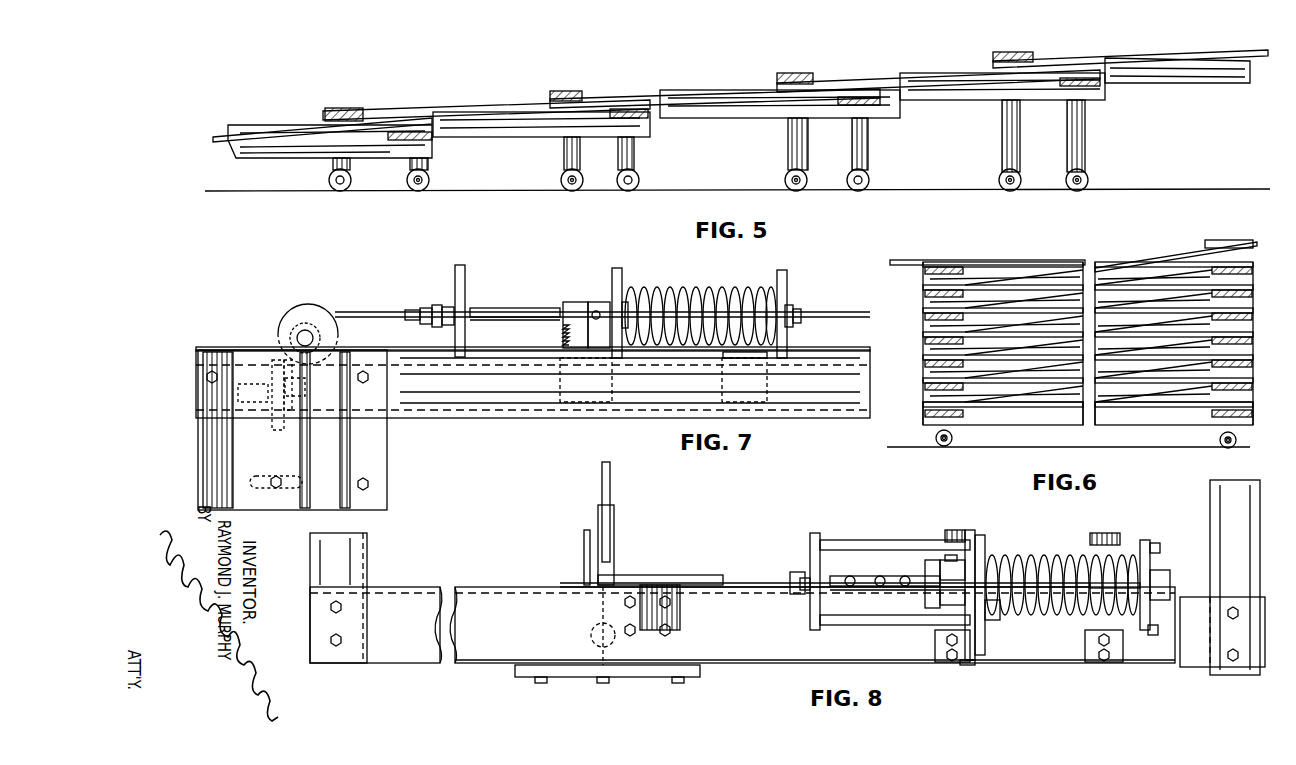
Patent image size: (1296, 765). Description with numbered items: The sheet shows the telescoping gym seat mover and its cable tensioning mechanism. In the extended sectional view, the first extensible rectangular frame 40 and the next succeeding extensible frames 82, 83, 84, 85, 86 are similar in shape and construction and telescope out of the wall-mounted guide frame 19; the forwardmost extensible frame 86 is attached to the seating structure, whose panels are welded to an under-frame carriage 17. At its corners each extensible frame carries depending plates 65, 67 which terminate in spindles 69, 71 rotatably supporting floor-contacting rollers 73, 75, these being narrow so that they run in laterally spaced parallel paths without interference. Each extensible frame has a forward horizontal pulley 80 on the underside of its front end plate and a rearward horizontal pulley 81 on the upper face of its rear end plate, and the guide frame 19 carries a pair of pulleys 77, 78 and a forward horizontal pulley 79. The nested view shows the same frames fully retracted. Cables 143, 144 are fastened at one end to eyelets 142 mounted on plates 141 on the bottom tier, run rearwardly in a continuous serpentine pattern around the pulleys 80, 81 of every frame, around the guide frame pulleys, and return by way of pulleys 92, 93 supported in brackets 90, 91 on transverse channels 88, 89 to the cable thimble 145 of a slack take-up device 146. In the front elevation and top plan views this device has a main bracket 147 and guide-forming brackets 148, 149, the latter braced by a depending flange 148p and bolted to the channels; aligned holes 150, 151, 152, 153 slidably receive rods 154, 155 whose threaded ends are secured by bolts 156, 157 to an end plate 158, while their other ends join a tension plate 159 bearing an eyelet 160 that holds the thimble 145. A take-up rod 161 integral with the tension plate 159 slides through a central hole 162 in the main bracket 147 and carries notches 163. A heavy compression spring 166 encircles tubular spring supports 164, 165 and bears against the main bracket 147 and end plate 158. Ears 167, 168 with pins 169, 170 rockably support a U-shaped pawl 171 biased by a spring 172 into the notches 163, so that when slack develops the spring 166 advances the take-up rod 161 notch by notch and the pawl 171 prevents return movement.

In FIG. 8, the under-frame carriage 17 is at (367, 560).
In FIG. 6, the guide frame 19 is at (1246, 285).
In FIG. 5, the first extensible rectangular frame 40 is at (1178, 84).
In FIG. 6, the first extensible rectangular frame 40 is at (1246, 308).
In FIG. 5, the depending plate 65 is at (428, 165).
In FIG. 5, the depending plate 67 is at (350, 168).
In FIG. 5, the spindle 69 is at (418, 182).
In FIG. 6, the spindle 69 is at (1235, 447).
In FIG. 5, the spindle 71 is at (561, 180).
In FIG. 6, the spindle 71 is at (950, 445).
In FIG. 5, the floor-contacting roller 73 is at (430, 180).
In FIG. 6, the floor-contacting roller 73 is at (1237, 441).
In FIG. 5, the floor-contacting roller 75 is at (329, 180).
In FIG. 6, the floor-contacting roller 75 is at (936, 438).
In FIG. 6, the pulley 77 is at (1255, 240).
In FIG. 6, the pulley 78 is at (1246, 263).
In FIG. 6, the forward horizontal pulley 79 is at (923, 287).
In FIG. 5, the forward horizontal pulley 80 is at (330, 114).
In FIG. 6, the forward horizontal pulley 80 is at (923, 311).
In FIG. 5, the rearward horizontal pulley 81 is at (642, 115).
In FIG. 5, the extensible frame 82 is at (957, 100).
In FIG. 6, the extensible frame 82 is at (1246, 332).
In FIG. 5, the extensible frame 83 is at (727, 112).
In FIG. 6, the extensible frame 83 is at (1246, 355).
In FIG. 5, the extensible frame 84 is at (510, 138).
In FIG. 6, the extensible frame 84 is at (1246, 378).
In FIG. 5, the extensible frame 85 is at (286, 162).
In FIG. 6, the extensible frame 85 is at (1246, 402).
In FIG. 6, the forwardmost extensible frame 86 is at (1246, 415).
In FIG. 7, the transverse channel 88 is at (488, 410).
In FIG. 8, the transverse channel 88 is at (770, 668).
In FIG. 8, the transverse channel 89 is at (495, 642).
In FIG. 7, the bracket 90 is at (262, 383).
In FIG. 8, the bracket 90 is at (584, 560).
In FIG. 7, the bracket 91 is at (276, 335).
In FIG. 8, the bracket 91 is at (680, 630).
In FIG. 7, the pulley 92 is at (292, 389).
In FIG. 8, the pulley 92 is at (614, 526).
In FIG. 7, the pulley 93 is at (300, 306).
In FIG. 8, the pulley 93 is at (655, 575).
In FIG. 7, the plate 141 is at (387, 472).
In FIG. 8, the plate 141 is at (578, 678).
In FIG. 8, the eyelet 142 is at (590, 633).
In FIG. 5, the cable 143 is at (222, 141).
In FIG. 6, the cable 143 is at (1165, 252).
In FIG. 7, the cable 144 is at (602, 314).
In FIG. 6, the cable 144 is at (910, 262).
In FIG. 8, the cable 144 is at (612, 480).
In FIG. 7, the cable thimble 145 is at (440, 322).
In FIG. 8, the cable thimble 145 is at (800, 572).
In FIG. 7, the slack take-up device 146 is at (787, 282).
In FIG. 8, the slack take-up device 146 is at (1035, 545).
In FIG. 7, the main bracket 147 is at (617, 268).
In FIG. 8, the main bracket 147 is at (968, 652).
In FIG. 7, the guide-forming bracket 148 is at (626, 292).
In FIG. 8, the guide-forming bracket 148 is at (935, 652).
In FIG. 7, the depending flange 148p is at (560, 384).
In FIG. 7, the guide-forming bracket 149 is at (770, 355).
In FIG. 8, the guide-forming bracket 149 is at (1085, 640).
In FIG. 8, the aligned hole 150 is at (1145, 540).
In FIG. 8, the aligned hole 151 is at (1152, 630).
In FIG. 8, the aligned hole 152 is at (970, 530).
In FIG. 8, the aligned hole 153 is at (935, 636).
In FIG. 8, the rod 154 is at (845, 540).
In FIG. 7, the rod 155 is at (793, 308).
In FIG. 8, the rod 155 is at (840, 625).
In FIG. 8, the bolt 156 is at (1158, 543).
In FIG. 8, the bolt 157 is at (1160, 625).
In FIG. 7, the end plate 158 is at (801, 320).
In FIG. 8, the end plate 158 is at (1150, 585).
In FIG. 7, the tension plate 159 is at (466, 275).
In FIG. 8, the tension plate 159 is at (810, 535).
In FIG. 7, the eyelet 160 is at (450, 305).
In FIG. 8, the eyelet 160 is at (805, 590).
In FIG. 7, the take-up rod 161 is at (520, 308).
In FIG. 8, the take-up rod 161 is at (860, 576).
In FIG. 8, the central hole 162 is at (1000, 615).
In FIG. 7, the notches 163 is at (534, 318).
In FIG. 8, the notches 163 is at (860, 591).
In FIG. 8, the tubular spring support 164 is at (1100, 533).
In FIG. 8, the tubular spring support 165 is at (1000, 555).
In FIG. 7, the compression spring 166 is at (710, 290).
In FIG. 8, the compression spring 166 is at (1050, 556).
In FIG. 8, the ear 167 is at (955, 565).
In FIG. 8, the ear 168 is at (945, 600).
In FIG. 8, the pin 169 is at (950, 556).
In FIG. 7, the pin 170 is at (600, 303).
In FIG. 8, the pin 170 is at (988, 620).
In FIG. 7, the U-shaped pawl 171 is at (568, 304).
In FIG. 8, the U-shaped pawl 171 is at (925, 572).
In FIG. 7, the spring 172 is at (580, 335).